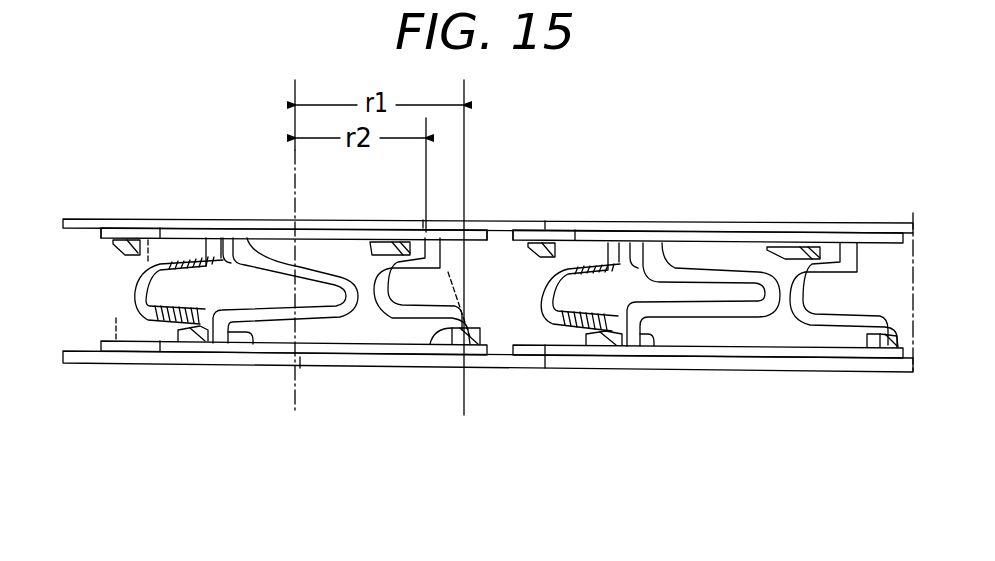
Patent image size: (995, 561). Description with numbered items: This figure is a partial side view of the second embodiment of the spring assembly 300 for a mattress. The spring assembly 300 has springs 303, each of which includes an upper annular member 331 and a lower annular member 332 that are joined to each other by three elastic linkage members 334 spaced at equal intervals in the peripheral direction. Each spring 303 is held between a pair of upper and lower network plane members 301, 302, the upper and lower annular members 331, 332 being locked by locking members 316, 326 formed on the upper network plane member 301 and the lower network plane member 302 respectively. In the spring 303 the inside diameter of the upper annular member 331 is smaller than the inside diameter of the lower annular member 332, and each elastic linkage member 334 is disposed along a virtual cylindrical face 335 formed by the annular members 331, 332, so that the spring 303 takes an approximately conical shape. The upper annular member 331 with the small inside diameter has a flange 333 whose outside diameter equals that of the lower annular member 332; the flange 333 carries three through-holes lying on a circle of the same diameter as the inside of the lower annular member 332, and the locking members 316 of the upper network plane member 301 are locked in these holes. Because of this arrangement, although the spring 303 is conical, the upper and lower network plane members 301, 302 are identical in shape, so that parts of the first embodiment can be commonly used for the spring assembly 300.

The spring assembly 300 is at (723, 212).
The upper network plane member 301 is at (106, 218).
The lower network plane member 302 is at (115, 364).
The spring 303 is at (468, 236).
The locking member 316 is at (385, 245).
The locking member 326 is at (258, 360).
The upper annular member 331 is at (160, 229).
The lower annular member 332 is at (105, 350).
The flange 333 is at (100, 238).
The elastic linkage member 334 is at (350, 322).
The virtual cylindrical face 335 is at (118, 320).